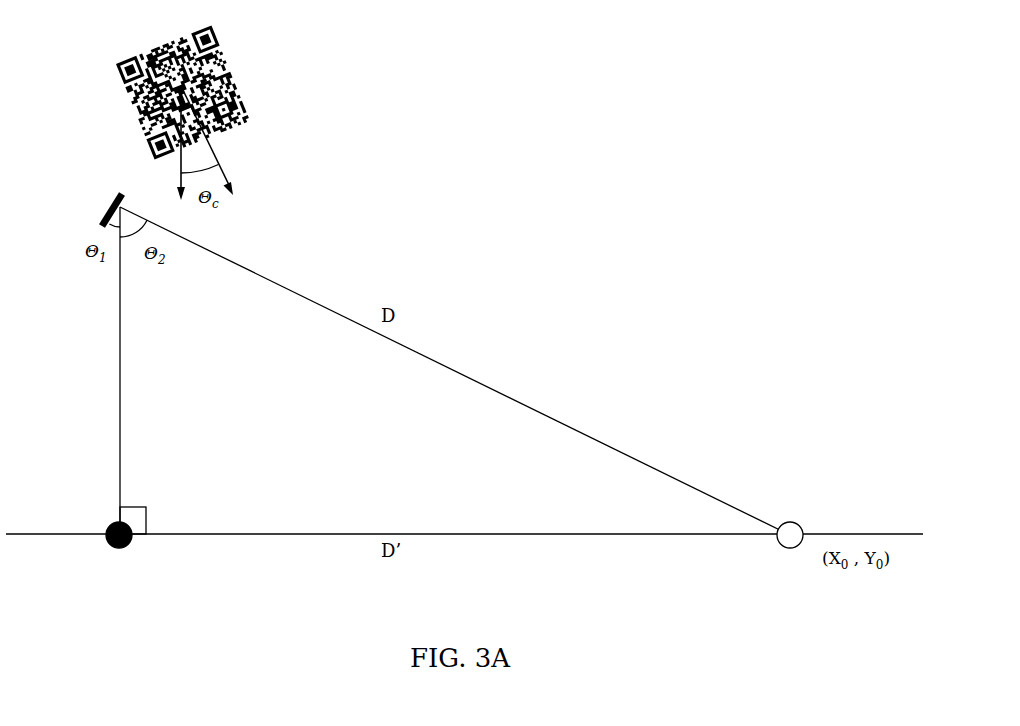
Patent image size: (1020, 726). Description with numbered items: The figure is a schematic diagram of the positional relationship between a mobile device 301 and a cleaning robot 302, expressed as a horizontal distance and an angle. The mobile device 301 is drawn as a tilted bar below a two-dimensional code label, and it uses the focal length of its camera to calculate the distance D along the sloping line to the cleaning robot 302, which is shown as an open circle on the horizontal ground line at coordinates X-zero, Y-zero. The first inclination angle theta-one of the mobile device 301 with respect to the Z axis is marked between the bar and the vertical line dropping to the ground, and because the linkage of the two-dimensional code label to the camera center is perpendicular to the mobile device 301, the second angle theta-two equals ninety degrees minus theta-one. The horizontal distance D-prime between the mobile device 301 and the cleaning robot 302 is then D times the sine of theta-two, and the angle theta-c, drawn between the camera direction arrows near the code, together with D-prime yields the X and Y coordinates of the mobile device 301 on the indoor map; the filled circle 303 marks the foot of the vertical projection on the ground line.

The mobile device 301 is at (116, 194).
The cleaning robot 302 is at (795, 521).
The foot point of camera projection on ground 303 is at (116, 547).